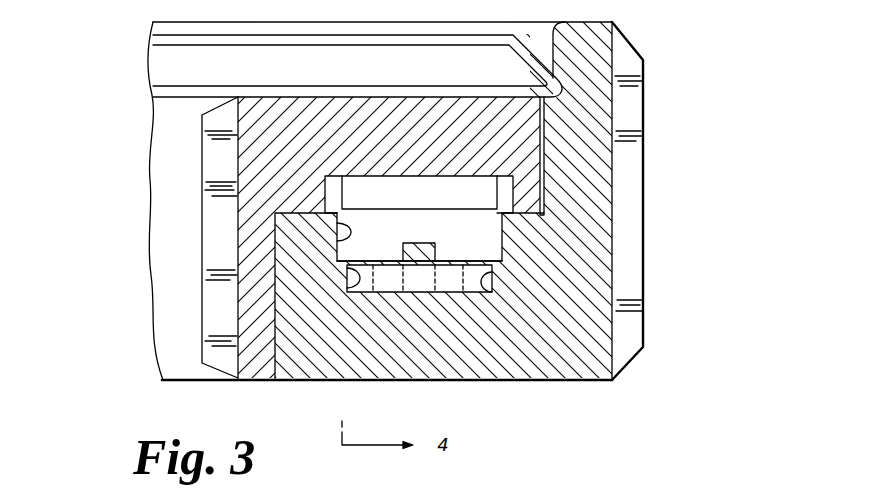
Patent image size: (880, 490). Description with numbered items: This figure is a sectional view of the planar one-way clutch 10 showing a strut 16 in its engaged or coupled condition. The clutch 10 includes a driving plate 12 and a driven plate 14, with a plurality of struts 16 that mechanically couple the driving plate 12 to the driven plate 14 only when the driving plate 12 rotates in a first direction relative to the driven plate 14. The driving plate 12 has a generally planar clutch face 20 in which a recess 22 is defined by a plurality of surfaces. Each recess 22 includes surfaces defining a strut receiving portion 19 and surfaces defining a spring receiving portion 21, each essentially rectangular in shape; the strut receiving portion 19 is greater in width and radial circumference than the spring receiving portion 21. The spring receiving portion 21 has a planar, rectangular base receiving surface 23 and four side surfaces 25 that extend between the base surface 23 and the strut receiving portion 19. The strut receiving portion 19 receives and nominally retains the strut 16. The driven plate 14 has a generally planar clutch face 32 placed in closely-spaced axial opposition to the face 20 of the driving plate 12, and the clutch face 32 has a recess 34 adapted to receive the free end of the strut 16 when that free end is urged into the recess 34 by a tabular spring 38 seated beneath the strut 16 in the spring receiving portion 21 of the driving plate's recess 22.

The planar one-way clutch 10 is at (681, 76).
The driving plate 12 is at (657, 288).
The driven plate 14 is at (558, 158).
The strut 16 is at (330, 192).
The strut receiving portion 19 is at (340, 257).
The clutch face 20 is at (298, 218).
The spring receiving portion 21 is at (352, 278).
The recess 22 is at (318, 240).
The base receiving surface 23 is at (447, 278).
The side surfaces 25 is at (482, 286).
The clutch face 32 is at (337, 232).
The recess 34 is at (535, 197).
The tabular spring 38 is at (505, 203).